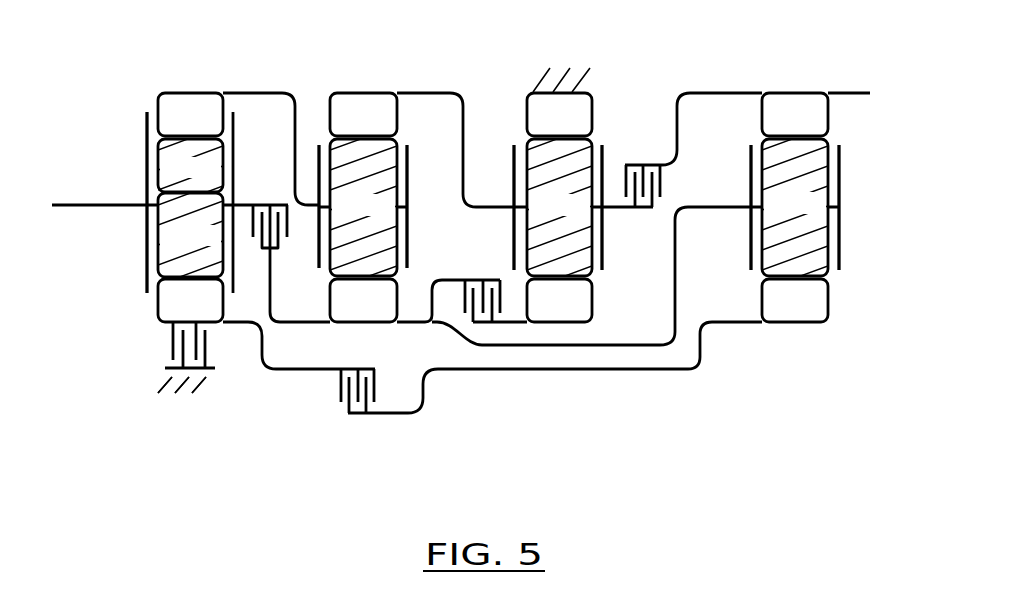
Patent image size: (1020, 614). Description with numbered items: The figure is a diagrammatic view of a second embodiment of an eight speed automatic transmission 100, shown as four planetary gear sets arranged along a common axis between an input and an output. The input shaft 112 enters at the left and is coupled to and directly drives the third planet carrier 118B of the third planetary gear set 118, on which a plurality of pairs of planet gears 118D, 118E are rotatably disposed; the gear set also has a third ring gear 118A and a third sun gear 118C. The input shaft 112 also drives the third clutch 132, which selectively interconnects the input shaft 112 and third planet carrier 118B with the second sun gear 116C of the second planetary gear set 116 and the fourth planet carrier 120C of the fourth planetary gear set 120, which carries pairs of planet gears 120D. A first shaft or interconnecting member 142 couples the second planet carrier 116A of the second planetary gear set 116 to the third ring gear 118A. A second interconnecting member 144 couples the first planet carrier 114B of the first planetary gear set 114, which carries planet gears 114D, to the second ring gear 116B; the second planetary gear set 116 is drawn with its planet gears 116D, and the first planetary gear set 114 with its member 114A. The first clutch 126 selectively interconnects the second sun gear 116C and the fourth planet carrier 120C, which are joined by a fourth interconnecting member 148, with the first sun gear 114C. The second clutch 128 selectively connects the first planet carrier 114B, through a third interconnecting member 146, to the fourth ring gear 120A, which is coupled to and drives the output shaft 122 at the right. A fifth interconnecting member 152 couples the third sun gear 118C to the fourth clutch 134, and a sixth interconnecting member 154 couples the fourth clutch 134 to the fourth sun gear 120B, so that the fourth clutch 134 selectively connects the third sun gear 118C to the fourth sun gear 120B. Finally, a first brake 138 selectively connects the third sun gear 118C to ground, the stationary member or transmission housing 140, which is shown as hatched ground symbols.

The transmission 100 is at (637, 64).
The input shaft 112 is at (118, 208).
The first planetary gear set 114 is at (601, 68).
The sun gear of third planetary gear set 114A is at (559, 114).
The first planet carrier 114B is at (512, 150).
The first sun gear 114C is at (559, 300).
The planet gears 114D is at (559, 208).
The second planetary gear set 116 is at (372, 74).
The second planet carrier 116A is at (299, 272).
The second ring gear 116B is at (363, 114).
The second sun gear 116C is at (363, 300).
The planet gears of second planetary gear set 116D is at (363, 208).
The third planetary gear set 118 is at (80, 316).
The third ring gear 118A is at (190, 114).
The third planet carrier 118B is at (147, 154).
The third sun gear 118C is at (190, 300).
The planet gears 118D is at (190, 168).
The planet gears 118E is at (190, 243).
The fourth planetary gear set 120 is at (787, 342).
The fourth ring gear 120A is at (795, 114).
The fourth sun gear 120B is at (795, 300).
The fourth planet carrier 120C is at (842, 157).
The planet gears 120D is at (795, 208).
The output shaft 122 is at (857, 90).
The first clutch 126 is at (470, 278).
The second clutch 128 is at (622, 175).
The third clutch 132 is at (252, 201).
The fourth clutch 134 is at (340, 392).
The first brake 138 is at (172, 337).
The transmission housing 140 is at (182, 395).
The first interconnecting member 142 is at (268, 90).
The second interconnecting member 144 is at (462, 182).
The third interconnecting member 146 is at (712, 90).
The fourth interconnecting member 148 is at (652, 349).
The fifth interconnecting member 152 is at (283, 372).
The sixth interconnecting member 154 is at (627, 372).